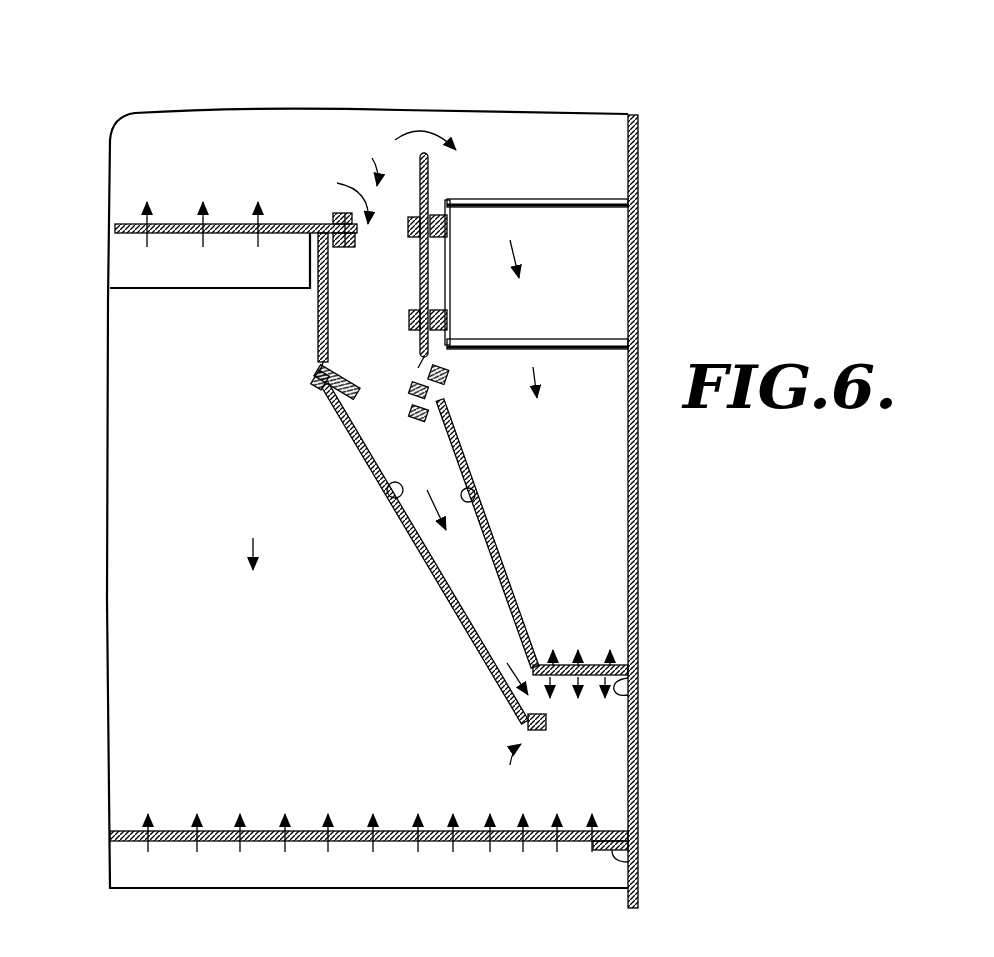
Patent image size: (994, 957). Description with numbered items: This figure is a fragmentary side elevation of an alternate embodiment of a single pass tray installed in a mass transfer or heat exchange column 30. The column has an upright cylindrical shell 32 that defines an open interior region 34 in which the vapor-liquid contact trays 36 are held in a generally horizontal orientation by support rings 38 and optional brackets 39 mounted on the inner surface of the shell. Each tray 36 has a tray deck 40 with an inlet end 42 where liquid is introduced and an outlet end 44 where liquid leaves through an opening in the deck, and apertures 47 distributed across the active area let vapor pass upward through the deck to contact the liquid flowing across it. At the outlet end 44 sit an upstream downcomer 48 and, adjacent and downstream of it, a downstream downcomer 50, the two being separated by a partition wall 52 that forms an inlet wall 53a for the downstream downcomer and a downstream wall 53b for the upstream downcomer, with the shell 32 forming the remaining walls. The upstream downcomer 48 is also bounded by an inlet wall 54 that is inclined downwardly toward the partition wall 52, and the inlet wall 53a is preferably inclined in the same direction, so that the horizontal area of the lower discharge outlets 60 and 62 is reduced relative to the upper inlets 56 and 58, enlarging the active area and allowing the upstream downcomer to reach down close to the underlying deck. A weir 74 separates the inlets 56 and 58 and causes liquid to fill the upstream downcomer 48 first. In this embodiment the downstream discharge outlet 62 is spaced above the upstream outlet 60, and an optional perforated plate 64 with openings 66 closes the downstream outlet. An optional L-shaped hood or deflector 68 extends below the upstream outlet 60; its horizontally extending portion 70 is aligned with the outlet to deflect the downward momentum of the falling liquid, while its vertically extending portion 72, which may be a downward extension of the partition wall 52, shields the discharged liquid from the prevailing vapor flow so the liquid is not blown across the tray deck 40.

The mass transfer or heat exchange column 30 is at (646, 242).
The cylindrical shell 32 is at (641, 283).
The interior region 34 is at (261, 535).
The vapor-liquid contact tray 36 is at (128, 238).
The support ring 38 is at (642, 862).
The bracket 39 is at (608, 200).
The tray deck 40 is at (178, 832).
The inlet end 42 is at (568, 833).
The outlet end 44 is at (312, 223).
The apertures 47 is at (248, 233).
The upstream downcomer 48 is at (348, 339).
The downstream downcomer 50 is at (605, 495).
The partition wall 52 is at (453, 423).
The inlet wall for the downstream downcomer 53a is at (472, 457).
The downstream wall for the upstream downcomer 53b is at (478, 494).
The inlet wall 54 is at (386, 498).
The upper inlet 56 is at (394, 177).
The upper inlet 58 is at (508, 163).
The lower discharge outlet 60 is at (547, 722).
The lower discharge outlet 62 is at (640, 698).
The perforated plate 64 is at (592, 663).
The openings 66 is at (612, 660).
The L-shaped hood or deflector 68 is at (495, 764).
The horizontally extending portion 70 is at (523, 728).
The vertically extending portion 72 is at (510, 713).
The weir 74 is at (431, 180).